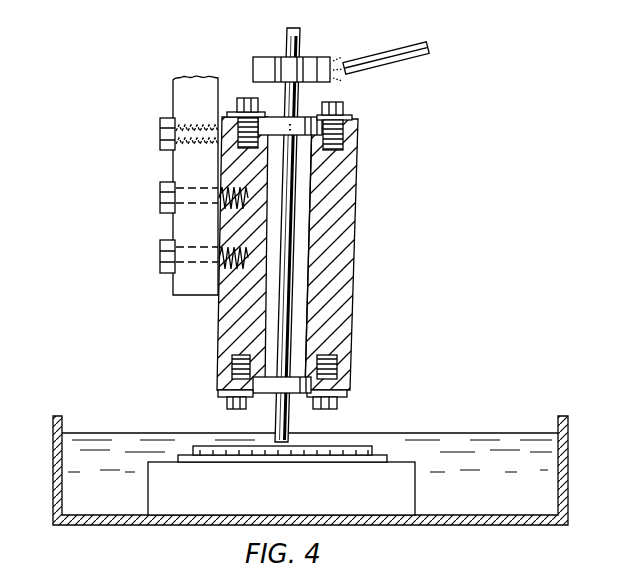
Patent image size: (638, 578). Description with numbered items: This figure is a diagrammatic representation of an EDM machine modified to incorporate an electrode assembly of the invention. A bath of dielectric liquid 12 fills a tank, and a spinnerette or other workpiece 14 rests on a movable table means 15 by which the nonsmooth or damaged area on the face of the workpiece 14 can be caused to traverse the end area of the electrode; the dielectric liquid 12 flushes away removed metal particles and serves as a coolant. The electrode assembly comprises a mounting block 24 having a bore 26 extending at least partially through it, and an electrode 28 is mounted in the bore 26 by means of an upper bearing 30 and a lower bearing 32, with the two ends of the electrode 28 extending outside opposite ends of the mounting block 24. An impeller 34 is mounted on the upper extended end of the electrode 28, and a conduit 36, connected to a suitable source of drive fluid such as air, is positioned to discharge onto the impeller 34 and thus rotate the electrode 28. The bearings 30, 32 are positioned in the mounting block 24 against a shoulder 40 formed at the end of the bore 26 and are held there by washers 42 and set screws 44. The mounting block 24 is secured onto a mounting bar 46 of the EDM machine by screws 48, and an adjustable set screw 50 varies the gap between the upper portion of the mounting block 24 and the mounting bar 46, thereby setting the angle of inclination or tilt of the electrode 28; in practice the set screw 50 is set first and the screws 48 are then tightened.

The dielectric liquid 12 is at (502, 499).
The workpiece 14 is at (381, 455).
The movable table means 15 is at (416, 461).
The mounting block 24 is at (355, 270).
The bore 26 is at (312, 191).
The electrode 28 is at (300, 30).
The bearing 30 is at (310, 118).
The bearing 32 is at (298, 394).
The impeller 34 is at (262, 58).
The conduit 36 is at (403, 47).
The shoulder 40 is at (335, 357).
The washer 42 is at (218, 394).
The set screw 44 is at (228, 404).
The mounting bar 46 is at (173, 93).
The screw 48 is at (160, 264).
The adjustable set screw 50 is at (160, 141).